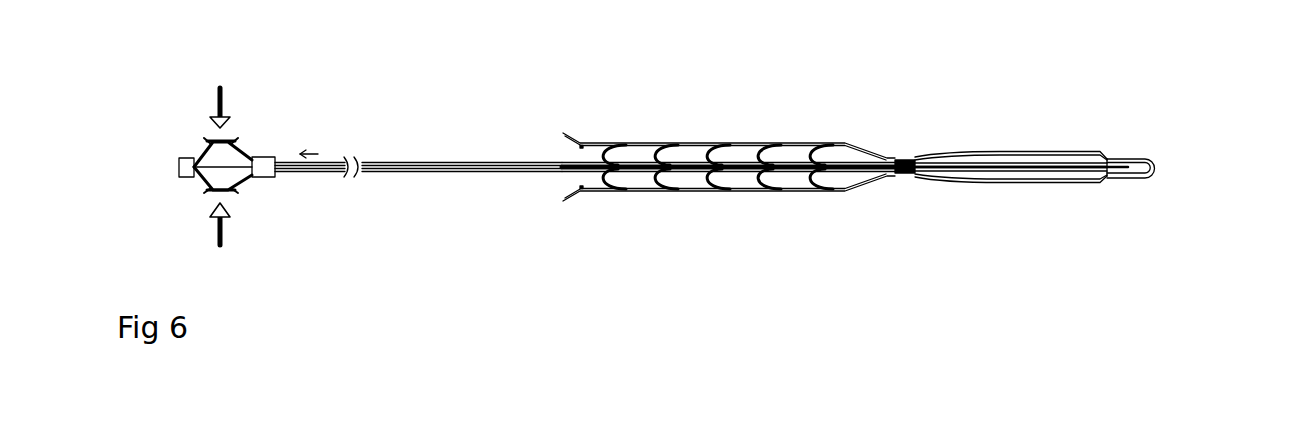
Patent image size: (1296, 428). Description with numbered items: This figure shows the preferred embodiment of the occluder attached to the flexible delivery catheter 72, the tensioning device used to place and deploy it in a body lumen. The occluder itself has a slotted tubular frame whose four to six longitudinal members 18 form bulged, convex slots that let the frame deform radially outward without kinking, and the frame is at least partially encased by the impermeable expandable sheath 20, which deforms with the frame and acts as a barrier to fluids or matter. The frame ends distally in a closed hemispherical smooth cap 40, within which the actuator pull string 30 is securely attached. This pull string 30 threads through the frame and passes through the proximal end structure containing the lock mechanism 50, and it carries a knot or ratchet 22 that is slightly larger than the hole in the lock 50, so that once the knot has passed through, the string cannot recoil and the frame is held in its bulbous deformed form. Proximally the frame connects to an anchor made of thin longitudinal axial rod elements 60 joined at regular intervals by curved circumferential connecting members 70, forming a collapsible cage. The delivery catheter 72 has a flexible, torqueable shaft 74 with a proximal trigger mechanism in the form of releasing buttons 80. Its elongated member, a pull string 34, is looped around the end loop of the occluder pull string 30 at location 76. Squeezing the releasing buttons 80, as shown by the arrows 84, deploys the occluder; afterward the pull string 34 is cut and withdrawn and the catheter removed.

The longitudinal members 18 is at (1028, 128).
The impermeable expandable sheath 20 is at (1053, 153).
The knot or ratchet 22 is at (1023, 167).
The actuator pull string 30 is at (547, 166).
The pull string of the delivery catheter 34 is at (225, 167).
The smooth cap 40 is at (1157, 167).
The lock mechanism 50 is at (900, 160).
The longitudinal axial rod elements 60 is at (729, 108).
The circumferential connecting members 70 is at (1205, 107).
The flexible delivery catheter 72 is at (263, 178).
The flexible torqueable shaft 74 is at (312, 176).
The looping location 76 is at (392, 167).
The releasing buttons 80 is at (220, 140).
The arrows 84 is at (152, 166).